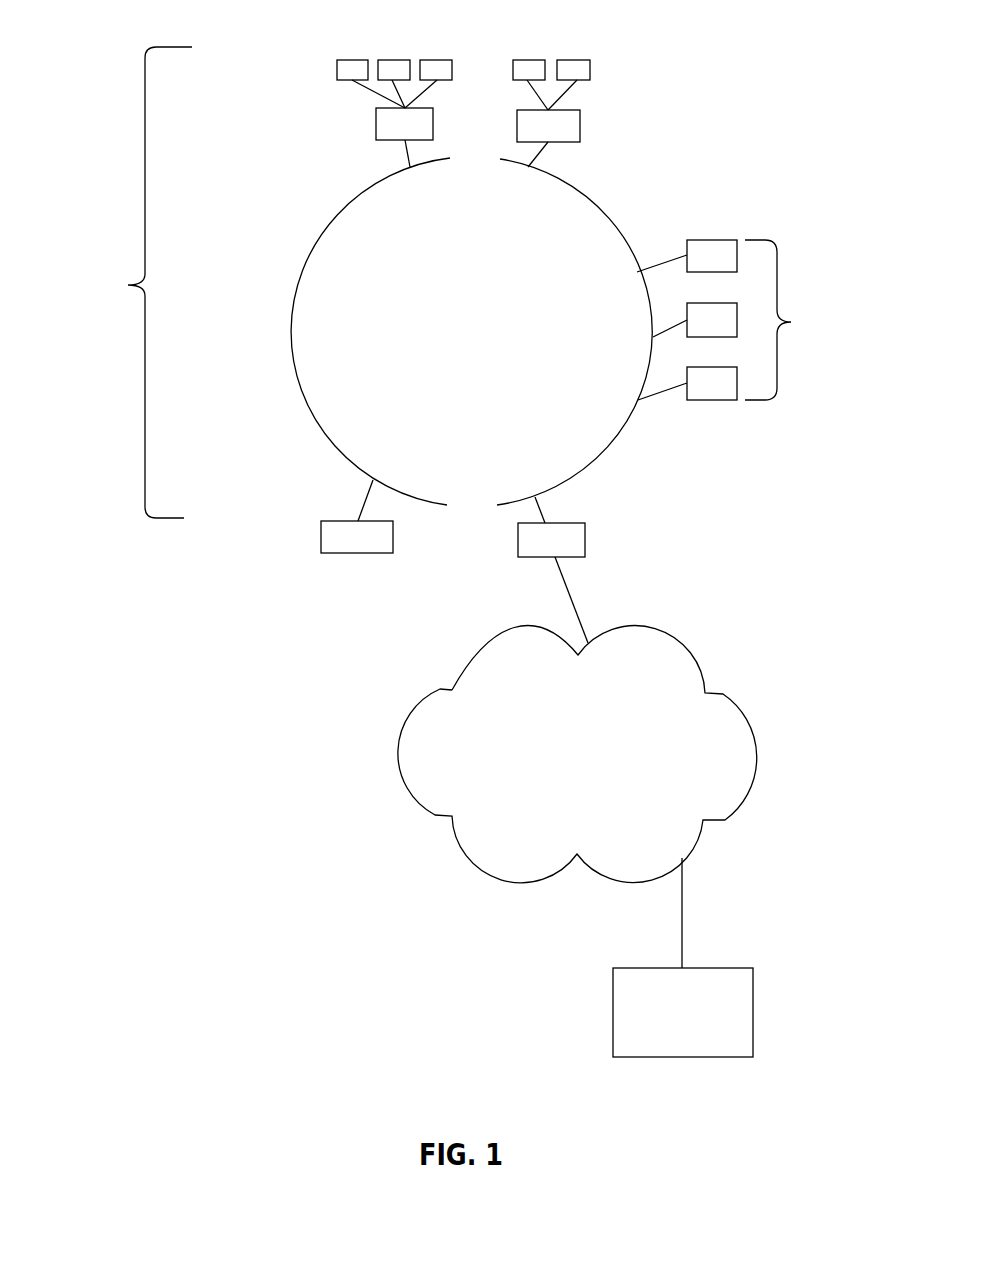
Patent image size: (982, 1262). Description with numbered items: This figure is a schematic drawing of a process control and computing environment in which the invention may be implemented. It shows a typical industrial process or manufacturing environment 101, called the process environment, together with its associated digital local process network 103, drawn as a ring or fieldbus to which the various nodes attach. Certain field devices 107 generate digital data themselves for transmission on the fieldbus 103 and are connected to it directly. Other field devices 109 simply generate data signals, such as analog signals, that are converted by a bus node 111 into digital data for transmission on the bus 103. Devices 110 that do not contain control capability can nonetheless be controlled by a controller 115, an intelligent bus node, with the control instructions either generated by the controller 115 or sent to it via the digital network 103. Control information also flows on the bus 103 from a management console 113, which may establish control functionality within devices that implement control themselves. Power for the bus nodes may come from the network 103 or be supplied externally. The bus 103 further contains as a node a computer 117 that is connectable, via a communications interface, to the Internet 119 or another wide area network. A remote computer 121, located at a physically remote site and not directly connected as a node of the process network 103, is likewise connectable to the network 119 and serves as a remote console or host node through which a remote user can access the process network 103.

The process environment 101 is at (117, 282).
The digital local process network 103 is at (367, 187).
The field devices 107 is at (739, 320).
The field devices 109 is at (443, 53).
The devices 110 is at (535, 48).
The bus node 111 is at (394, 123).
The management console 113 is at (357, 516).
The controller 115 is at (548, 123).
The computer 117 is at (553, 570).
The Internet 119 is at (727, 717).
The remote computer 121 is at (683, 957).